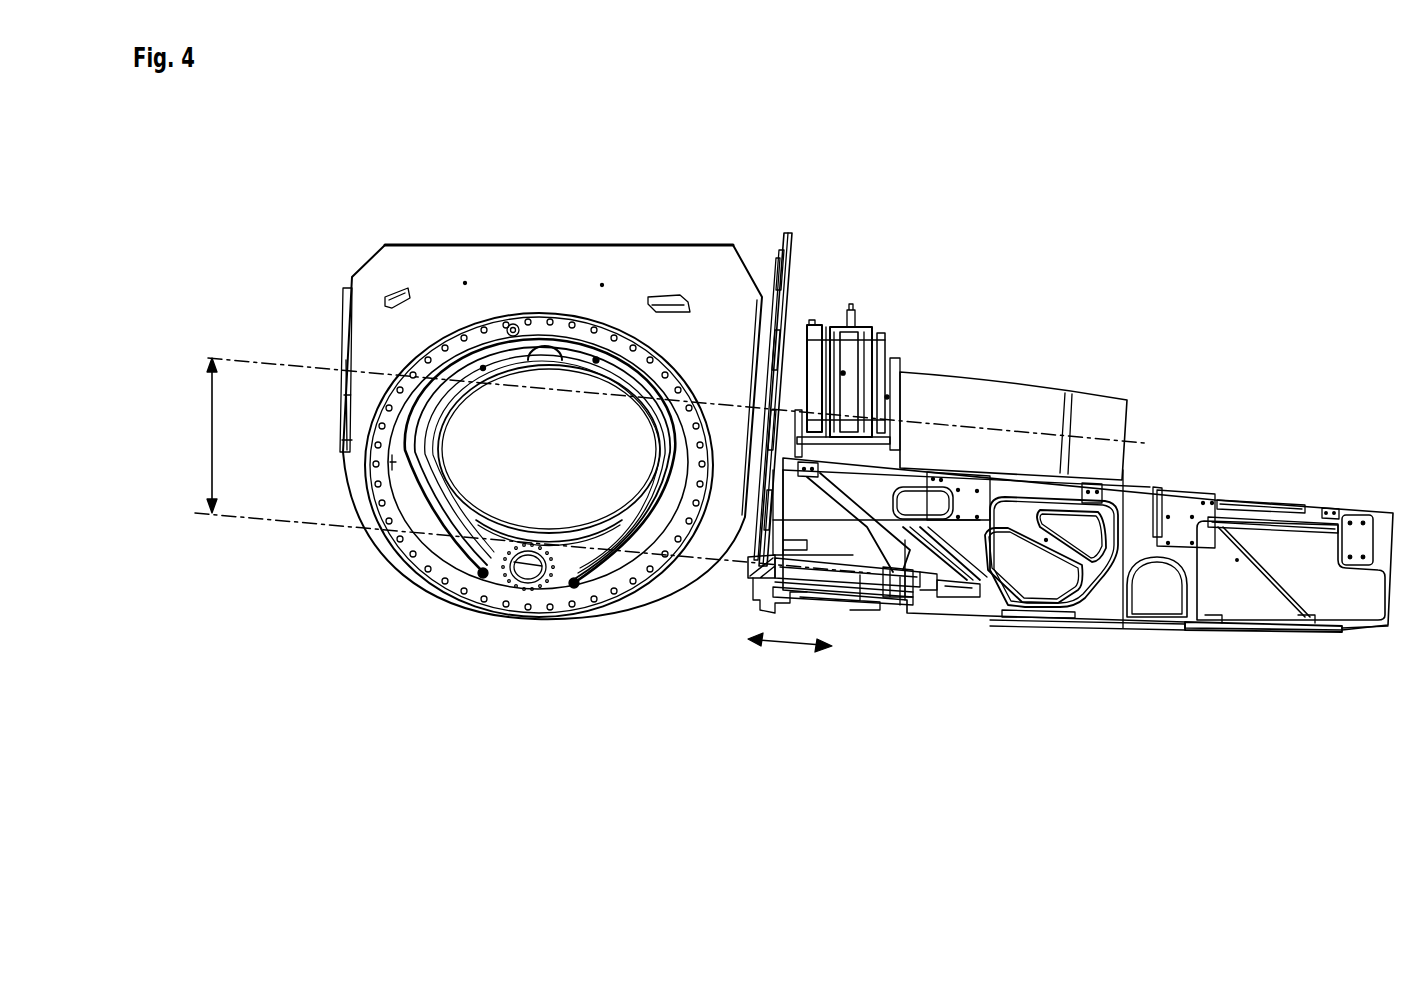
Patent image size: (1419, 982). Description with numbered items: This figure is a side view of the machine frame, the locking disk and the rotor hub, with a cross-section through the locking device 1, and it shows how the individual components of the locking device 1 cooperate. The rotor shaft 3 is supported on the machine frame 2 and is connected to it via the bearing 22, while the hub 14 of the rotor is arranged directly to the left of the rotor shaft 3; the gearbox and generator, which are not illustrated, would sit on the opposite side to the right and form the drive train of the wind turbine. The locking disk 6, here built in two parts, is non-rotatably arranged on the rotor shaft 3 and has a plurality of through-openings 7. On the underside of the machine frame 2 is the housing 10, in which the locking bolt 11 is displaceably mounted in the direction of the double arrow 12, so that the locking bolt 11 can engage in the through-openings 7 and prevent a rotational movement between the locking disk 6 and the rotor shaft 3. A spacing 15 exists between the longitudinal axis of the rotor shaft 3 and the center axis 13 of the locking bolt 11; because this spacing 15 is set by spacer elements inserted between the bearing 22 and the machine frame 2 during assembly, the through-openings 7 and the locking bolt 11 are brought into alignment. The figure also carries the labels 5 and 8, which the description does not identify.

The locking device 1 is at (660, 690).
The machine frame 2 is at (1143, 525).
The rotor shaft 3 is at (1055, 404).
The first axis 5 is at (272, 355).
The locking disk 6 is at (788, 235).
The through-openings 7 is at (782, 258).
The clip 8 is at (790, 237).
The housing 10 is at (910, 600).
The locking bolt 11 is at (847, 572).
The double arrow 12 is at (790, 667).
The center axis of the locking bolt 13 is at (277, 522).
The rotor hub 14 is at (541, 268).
The spacing 15 is at (193, 435).
The bearing 22 is at (885, 332).